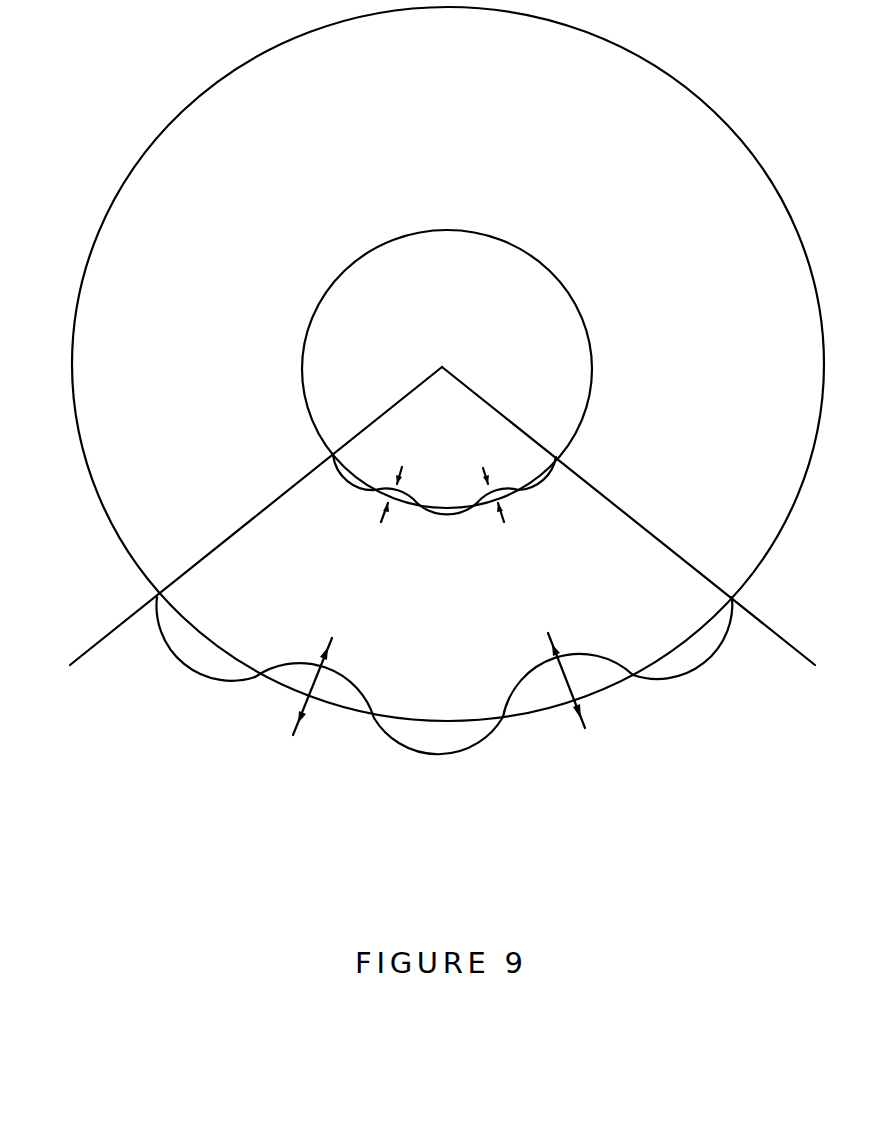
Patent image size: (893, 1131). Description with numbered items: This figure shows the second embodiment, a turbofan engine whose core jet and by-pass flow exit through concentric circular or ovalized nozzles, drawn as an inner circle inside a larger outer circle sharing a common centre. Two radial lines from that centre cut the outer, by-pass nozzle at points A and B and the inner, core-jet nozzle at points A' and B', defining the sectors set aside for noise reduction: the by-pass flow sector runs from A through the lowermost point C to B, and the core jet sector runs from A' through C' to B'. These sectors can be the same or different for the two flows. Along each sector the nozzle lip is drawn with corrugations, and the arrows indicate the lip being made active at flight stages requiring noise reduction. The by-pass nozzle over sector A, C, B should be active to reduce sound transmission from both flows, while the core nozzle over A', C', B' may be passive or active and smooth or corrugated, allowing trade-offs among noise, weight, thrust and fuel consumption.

The end point of by-pass flow sector A is at (242, 542).
The end point of by-pass flow sector B is at (639, 542).
The mid point of by-pass flow sector C is at (439, 713).
The end point of core jet sector A' is at (362, 488).
The end point of core jet sector B' is at (526, 489).
The mid point of core jet sector C' is at (447, 527).